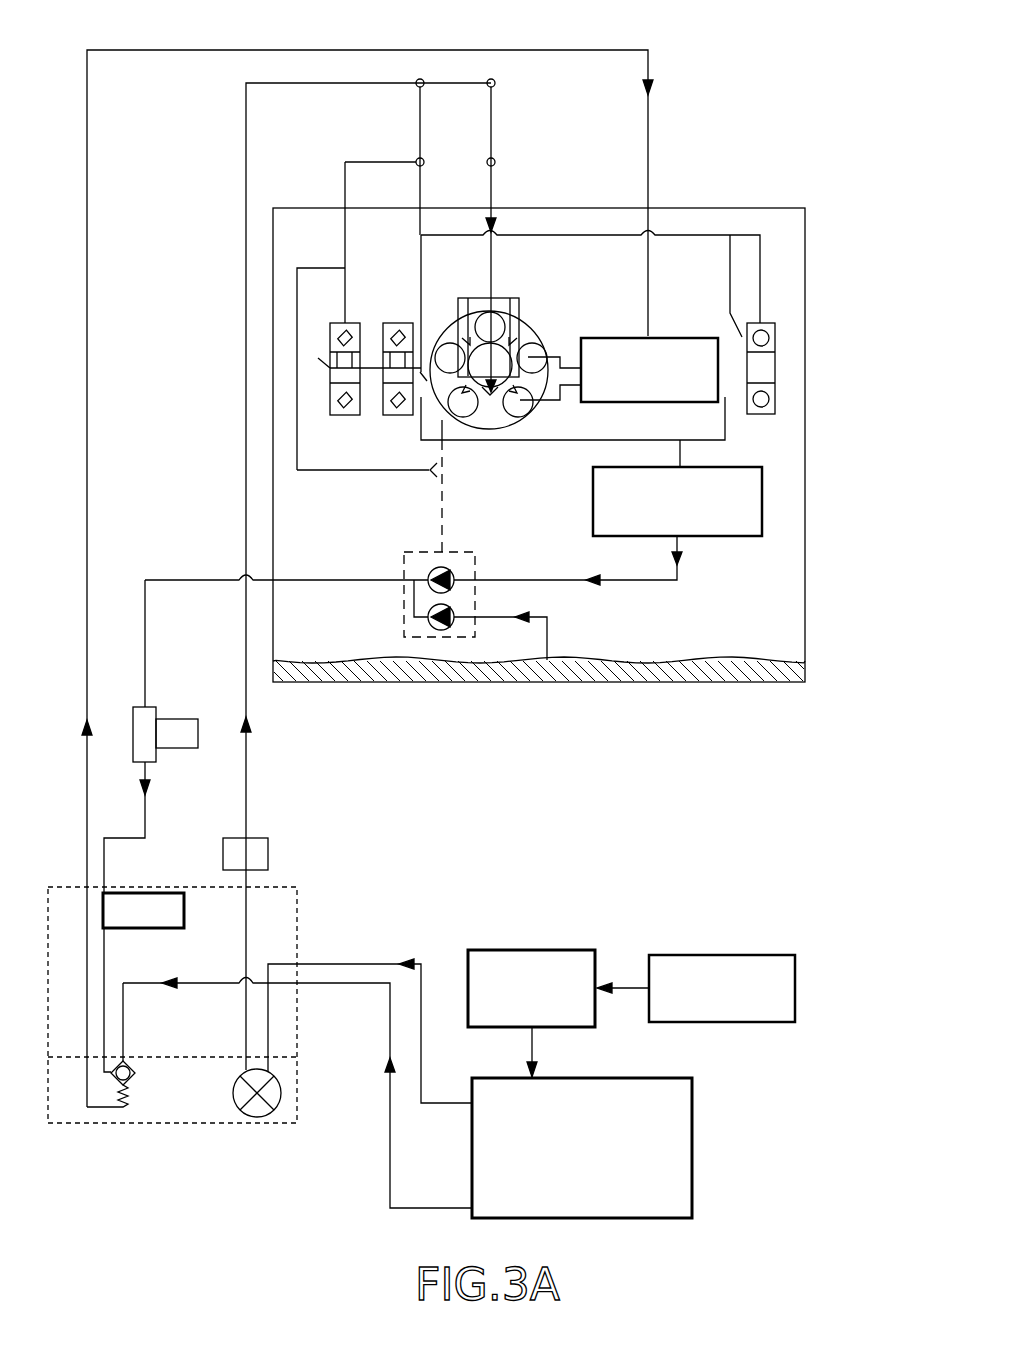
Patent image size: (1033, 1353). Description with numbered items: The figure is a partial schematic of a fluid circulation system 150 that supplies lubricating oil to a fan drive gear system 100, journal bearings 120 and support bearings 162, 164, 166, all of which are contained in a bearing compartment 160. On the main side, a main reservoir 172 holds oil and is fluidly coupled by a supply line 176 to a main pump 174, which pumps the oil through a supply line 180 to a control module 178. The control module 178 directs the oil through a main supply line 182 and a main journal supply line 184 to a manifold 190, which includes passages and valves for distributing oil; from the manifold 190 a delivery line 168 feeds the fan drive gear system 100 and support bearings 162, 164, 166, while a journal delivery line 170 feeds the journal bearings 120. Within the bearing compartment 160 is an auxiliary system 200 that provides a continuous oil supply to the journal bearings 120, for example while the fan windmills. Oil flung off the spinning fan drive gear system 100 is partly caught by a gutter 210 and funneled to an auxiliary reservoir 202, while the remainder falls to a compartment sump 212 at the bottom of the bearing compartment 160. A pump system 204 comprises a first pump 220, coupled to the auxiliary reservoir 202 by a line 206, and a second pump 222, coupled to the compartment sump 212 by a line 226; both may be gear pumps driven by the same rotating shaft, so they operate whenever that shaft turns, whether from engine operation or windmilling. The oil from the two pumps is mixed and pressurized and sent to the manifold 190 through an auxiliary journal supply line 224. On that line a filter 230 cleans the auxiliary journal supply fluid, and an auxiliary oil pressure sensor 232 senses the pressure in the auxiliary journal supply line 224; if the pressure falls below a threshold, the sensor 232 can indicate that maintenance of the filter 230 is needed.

The fan drive gear system 100 is at (525, 325).
The journal bearings 120 is at (604, 337).
The fluid circulation system 150 is at (782, 50).
The bearing compartment 160 is at (806, 243).
The support bearing 162 is at (330, 410).
The support bearing 164 is at (396, 321).
The support bearing 166 is at (776, 345).
The delivery line 168 is at (245, 128).
The journal delivery line 170 is at (87, 318).
The main reservoir 172 is at (690, 952).
The main pump 174 is at (482, 948).
The supply line 176 is at (612, 985).
The control module 178 is at (693, 1120).
The supply line 180 is at (535, 1045).
The main supply line 182 is at (438, 1100).
The main journal supply line 184 is at (430, 1205).
The manifold 190 is at (60, 887).
The auxiliary system 200 is at (873, 420).
The auxiliary reservoir 202 is at (762, 505).
The pump system 204 is at (475, 562).
The line 206 is at (677, 568).
The gutter 210 is at (560, 441).
The compartment sump 212 is at (705, 660).
The first pump 220 is at (428, 572).
The second pump 222 is at (428, 625).
The auxiliary journal supply line 224 is at (145, 670).
The line 226 is at (560, 640).
The filter 230 is at (198, 740).
The auxiliary oil pressure (AOP) sensor 232 is at (177, 892).